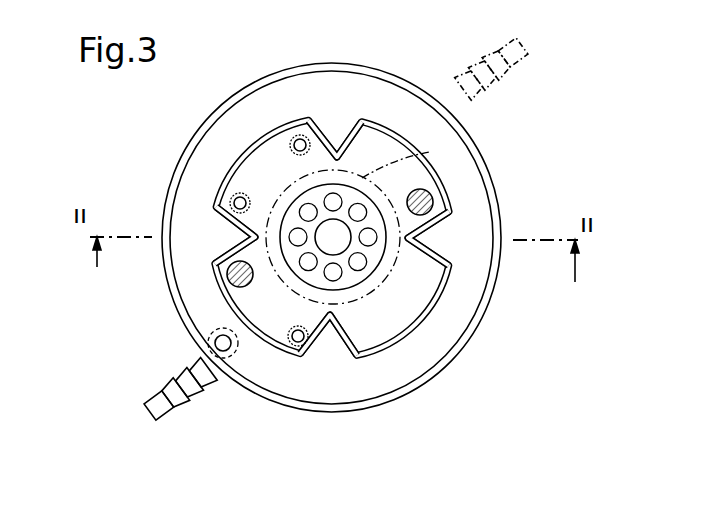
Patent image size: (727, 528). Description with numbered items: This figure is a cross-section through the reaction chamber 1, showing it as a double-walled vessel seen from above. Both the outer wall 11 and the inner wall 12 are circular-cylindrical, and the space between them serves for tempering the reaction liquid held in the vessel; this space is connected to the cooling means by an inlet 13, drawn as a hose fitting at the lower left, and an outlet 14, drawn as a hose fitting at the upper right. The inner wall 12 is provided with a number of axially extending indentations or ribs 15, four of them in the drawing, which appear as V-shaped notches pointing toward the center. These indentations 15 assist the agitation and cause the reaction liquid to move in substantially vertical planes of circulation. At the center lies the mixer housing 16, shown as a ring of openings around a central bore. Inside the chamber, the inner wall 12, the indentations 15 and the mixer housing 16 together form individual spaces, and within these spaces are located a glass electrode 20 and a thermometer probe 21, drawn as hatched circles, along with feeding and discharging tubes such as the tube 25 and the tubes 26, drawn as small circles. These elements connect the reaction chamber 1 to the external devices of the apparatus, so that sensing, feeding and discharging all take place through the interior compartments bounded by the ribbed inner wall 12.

The reaction chamber 1 is at (402, 72).
The outer wall 11 is at (266, 80).
The inner wall 12 is at (247, 150).
The inlet 13 is at (160, 390).
The outlet 14 is at (523, 80).
The indentations 15 is at (334, 150).
The mixer housing 16 is at (417, 163).
The glass electrode 20 is at (431, 197).
The thermometer probe 21 is at (228, 285).
The feeding and discharging tube 25 is at (296, 151).
The feeding and discharging tube 26 is at (233, 194).